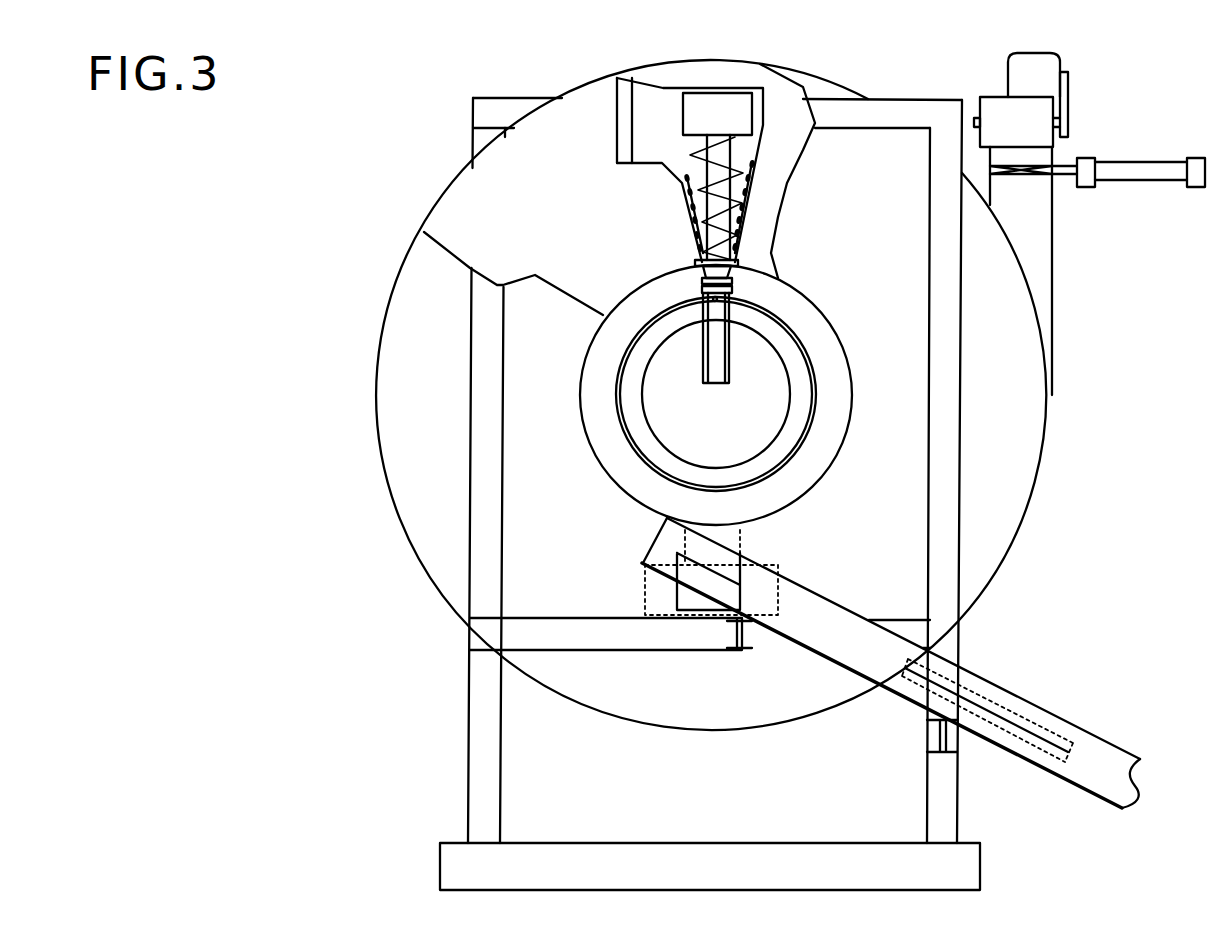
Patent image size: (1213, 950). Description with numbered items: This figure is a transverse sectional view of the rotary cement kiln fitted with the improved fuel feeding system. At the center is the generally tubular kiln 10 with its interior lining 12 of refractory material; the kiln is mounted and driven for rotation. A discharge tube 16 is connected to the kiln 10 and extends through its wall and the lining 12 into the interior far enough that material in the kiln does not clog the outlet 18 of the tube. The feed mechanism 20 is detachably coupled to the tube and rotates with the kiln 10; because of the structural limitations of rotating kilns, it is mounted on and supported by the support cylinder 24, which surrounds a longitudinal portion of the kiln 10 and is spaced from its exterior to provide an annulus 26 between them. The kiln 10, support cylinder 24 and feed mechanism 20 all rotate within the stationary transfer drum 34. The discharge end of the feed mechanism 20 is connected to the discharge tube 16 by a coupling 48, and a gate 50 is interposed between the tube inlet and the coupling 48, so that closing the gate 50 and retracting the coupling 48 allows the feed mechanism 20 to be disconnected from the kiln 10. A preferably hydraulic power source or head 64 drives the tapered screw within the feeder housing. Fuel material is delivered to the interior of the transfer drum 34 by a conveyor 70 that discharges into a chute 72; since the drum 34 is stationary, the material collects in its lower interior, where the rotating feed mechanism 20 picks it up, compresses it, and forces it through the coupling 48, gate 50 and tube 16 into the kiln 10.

The kiln 10 is at (813, 407).
The interior lining 12 is at (712, 448).
The discharge tube 16 is at (698, 375).
The outlet 18 is at (722, 384).
The feed mechanism 20 is at (757, 190).
The support cylinder 24 is at (817, 481).
The annulus 26 is at (813, 452).
The transfer drum 34 is at (442, 208).
The coupling 48 is at (737, 263).
The gate 50 is at (733, 289).
The power source or head 64 is at (748, 90).
The conveyor 70 is at (1000, 683).
The chute 72 is at (742, 553).